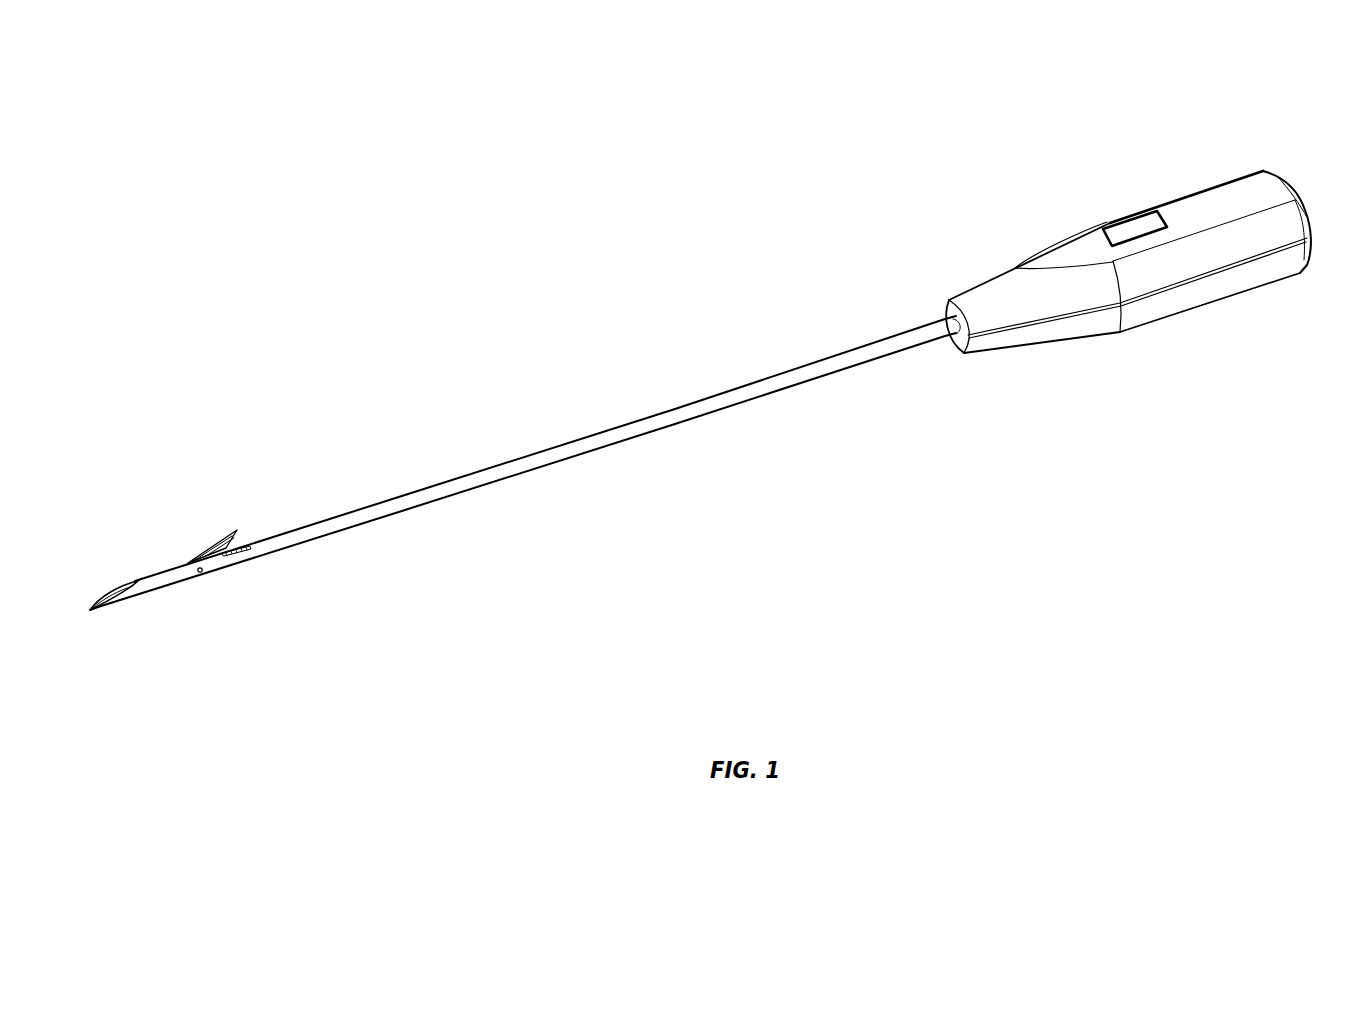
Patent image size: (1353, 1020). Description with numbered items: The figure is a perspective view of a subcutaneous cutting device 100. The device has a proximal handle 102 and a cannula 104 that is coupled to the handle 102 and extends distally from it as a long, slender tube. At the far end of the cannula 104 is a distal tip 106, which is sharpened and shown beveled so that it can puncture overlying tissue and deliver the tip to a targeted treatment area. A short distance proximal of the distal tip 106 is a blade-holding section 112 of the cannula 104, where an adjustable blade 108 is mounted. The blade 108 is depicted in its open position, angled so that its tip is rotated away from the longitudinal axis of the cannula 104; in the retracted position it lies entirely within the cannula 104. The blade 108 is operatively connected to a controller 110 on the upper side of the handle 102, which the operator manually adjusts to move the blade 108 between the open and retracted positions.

The subcutaneous cutting device 100 is at (333, 178).
The proximal handle 102 is at (1090, 318).
The cannula 104 is at (750, 387).
The distal tip 106 is at (112, 608).
The adjustable blade 108 is at (223, 537).
The controller 110 is at (1120, 227).
The blade-holding section 112 is at (233, 563).